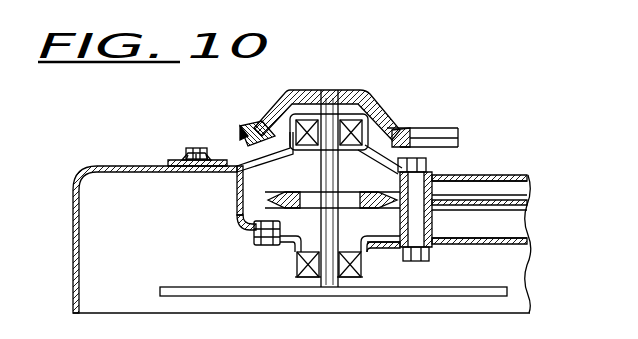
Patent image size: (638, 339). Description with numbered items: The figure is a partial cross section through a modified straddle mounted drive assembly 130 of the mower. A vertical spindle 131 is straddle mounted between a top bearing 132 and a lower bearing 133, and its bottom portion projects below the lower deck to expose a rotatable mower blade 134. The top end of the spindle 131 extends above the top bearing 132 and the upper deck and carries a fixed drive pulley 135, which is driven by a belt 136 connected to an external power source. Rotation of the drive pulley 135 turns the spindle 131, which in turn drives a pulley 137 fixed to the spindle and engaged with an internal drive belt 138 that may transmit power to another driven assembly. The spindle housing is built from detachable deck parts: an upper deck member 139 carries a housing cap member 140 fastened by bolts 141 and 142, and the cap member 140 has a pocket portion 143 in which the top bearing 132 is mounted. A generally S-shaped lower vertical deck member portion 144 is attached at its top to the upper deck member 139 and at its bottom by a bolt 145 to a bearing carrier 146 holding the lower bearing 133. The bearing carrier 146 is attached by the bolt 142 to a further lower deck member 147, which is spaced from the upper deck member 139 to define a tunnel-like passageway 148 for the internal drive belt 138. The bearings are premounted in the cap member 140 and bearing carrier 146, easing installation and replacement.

The pivot assembly 130 is at (462, 135).
The spindle 131 is at (337, 205).
The top bearing 132 is at (375, 118).
The lower bearing 133 is at (362, 262).
The mower blade 134 is at (505, 296).
The drive pulley 135 is at (348, 92).
The belt 136 is at (425, 130).
The pulley 137 is at (240, 221).
The internal drive belt 138 is at (528, 183).
The upper deck member 139 is at (128, 165).
The housing cap member 140 is at (350, 143).
The bolt 141 is at (193, 148).
The bolt 142 is at (400, 162).
The pocket portion 143 is at (287, 124).
The lower vertical deck member portion 144 is at (236, 205).
The bolt 145 is at (254, 245).
The bearing carrier 146 is at (298, 270).
The further lower deck member 147 is at (470, 245).
The tunnel-like passageway 148 is at (500, 232).